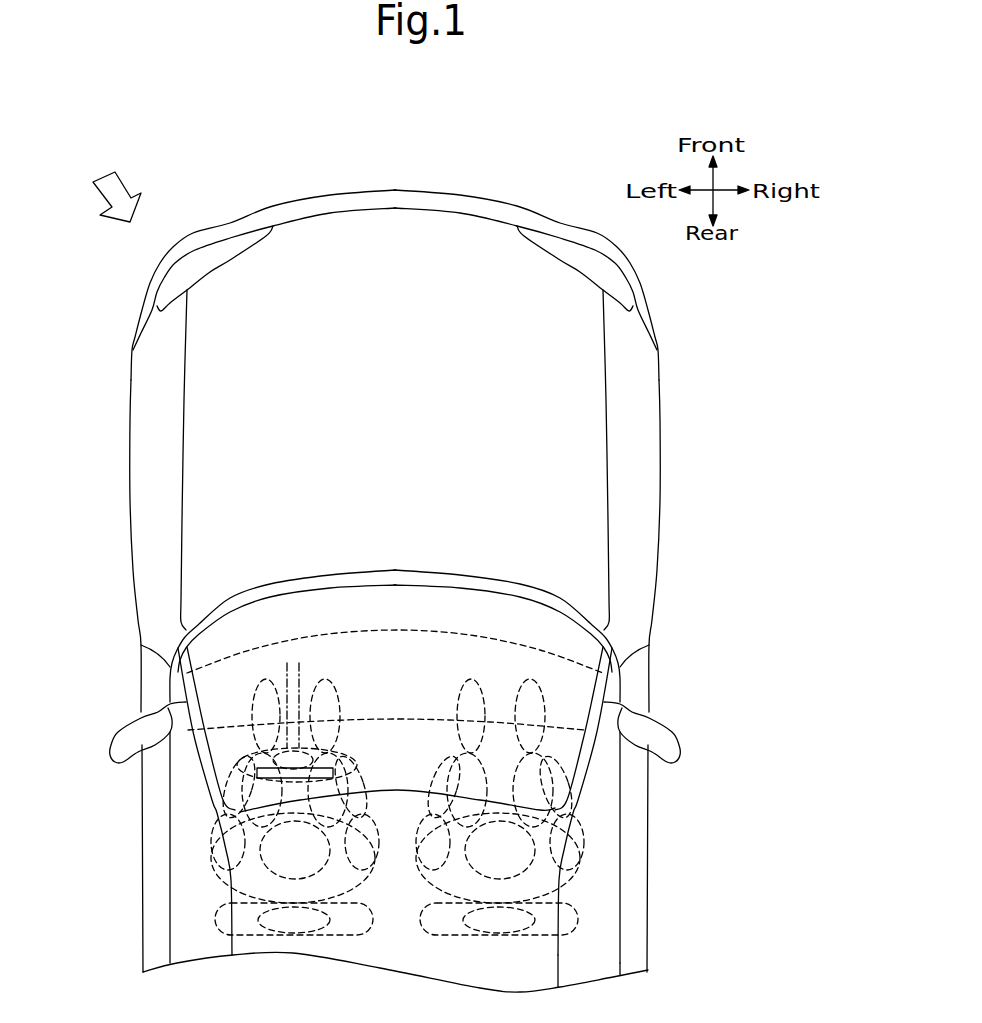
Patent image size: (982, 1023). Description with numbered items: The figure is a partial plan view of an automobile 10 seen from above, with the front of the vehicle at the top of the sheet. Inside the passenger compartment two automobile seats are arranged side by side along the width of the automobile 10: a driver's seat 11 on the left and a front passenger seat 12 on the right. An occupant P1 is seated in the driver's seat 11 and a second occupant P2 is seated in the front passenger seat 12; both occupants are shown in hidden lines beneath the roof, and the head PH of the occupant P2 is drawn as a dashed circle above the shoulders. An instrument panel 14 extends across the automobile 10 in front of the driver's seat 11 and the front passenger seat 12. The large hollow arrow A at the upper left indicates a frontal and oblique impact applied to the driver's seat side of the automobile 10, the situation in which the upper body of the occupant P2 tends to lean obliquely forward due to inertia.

The automobile 10 is at (660, 461).
The driver's seat 11 is at (292, 937).
The front passenger seat 12 is at (498, 937).
The instrument panel 14 is at (393, 723).
The occupant P1 is at (213, 858).
The occupant P2 is at (582, 858).
The head PH is at (440, 872).
The arrow A is at (123, 180).